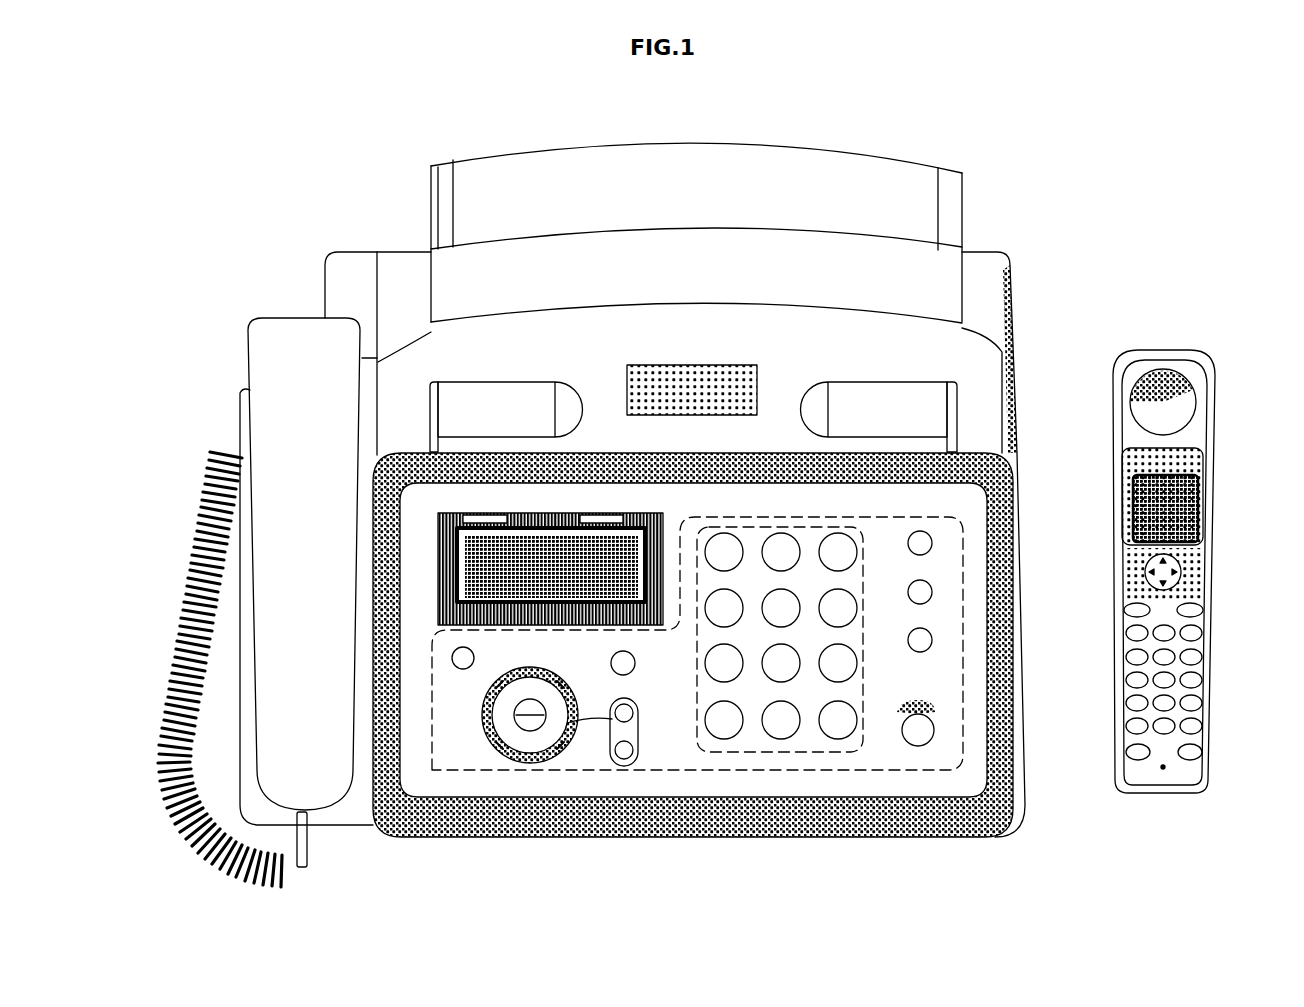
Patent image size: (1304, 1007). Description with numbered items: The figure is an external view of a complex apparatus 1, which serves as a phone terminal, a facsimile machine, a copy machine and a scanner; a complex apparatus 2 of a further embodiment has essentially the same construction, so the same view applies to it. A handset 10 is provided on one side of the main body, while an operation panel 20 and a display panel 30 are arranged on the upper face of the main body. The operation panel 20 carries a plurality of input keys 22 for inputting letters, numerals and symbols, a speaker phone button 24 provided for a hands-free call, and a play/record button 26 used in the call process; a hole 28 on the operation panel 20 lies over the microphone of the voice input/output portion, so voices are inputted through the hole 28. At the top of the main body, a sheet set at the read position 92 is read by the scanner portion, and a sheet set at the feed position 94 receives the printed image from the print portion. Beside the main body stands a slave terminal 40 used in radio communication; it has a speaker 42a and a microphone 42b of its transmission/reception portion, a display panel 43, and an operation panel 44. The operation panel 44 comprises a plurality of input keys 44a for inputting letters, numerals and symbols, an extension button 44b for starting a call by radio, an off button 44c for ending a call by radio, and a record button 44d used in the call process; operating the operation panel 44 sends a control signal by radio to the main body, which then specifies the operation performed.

The complex apparatus 1 is at (357, 195).
The complex apparatus 2 is at (306, 178).
The handset 10 is at (265, 350).
The operation panel 20 is at (995, 838).
The input keys 22 is at (865, 805).
The speaker phone button 24 is at (920, 592).
The play/record button 26 is at (553, 747).
The hole 28 is at (657, 755).
The display panel 30 is at (633, 600).
The slave terminal 40 is at (1180, 569).
The speaker 42a is at (1186, 392).
The microphone 42b is at (1165, 770).
The display panel 43 is at (1208, 510).
The operation panel 44 is at (1212, 572).
The input keys 44a is at (1203, 641).
The extension button 44b is at (1127, 616).
The off button 44c is at (1205, 625).
The record button 44d is at (1207, 753).
The read position 92 is at (469, 364).
The feed position 94 is at (942, 199).